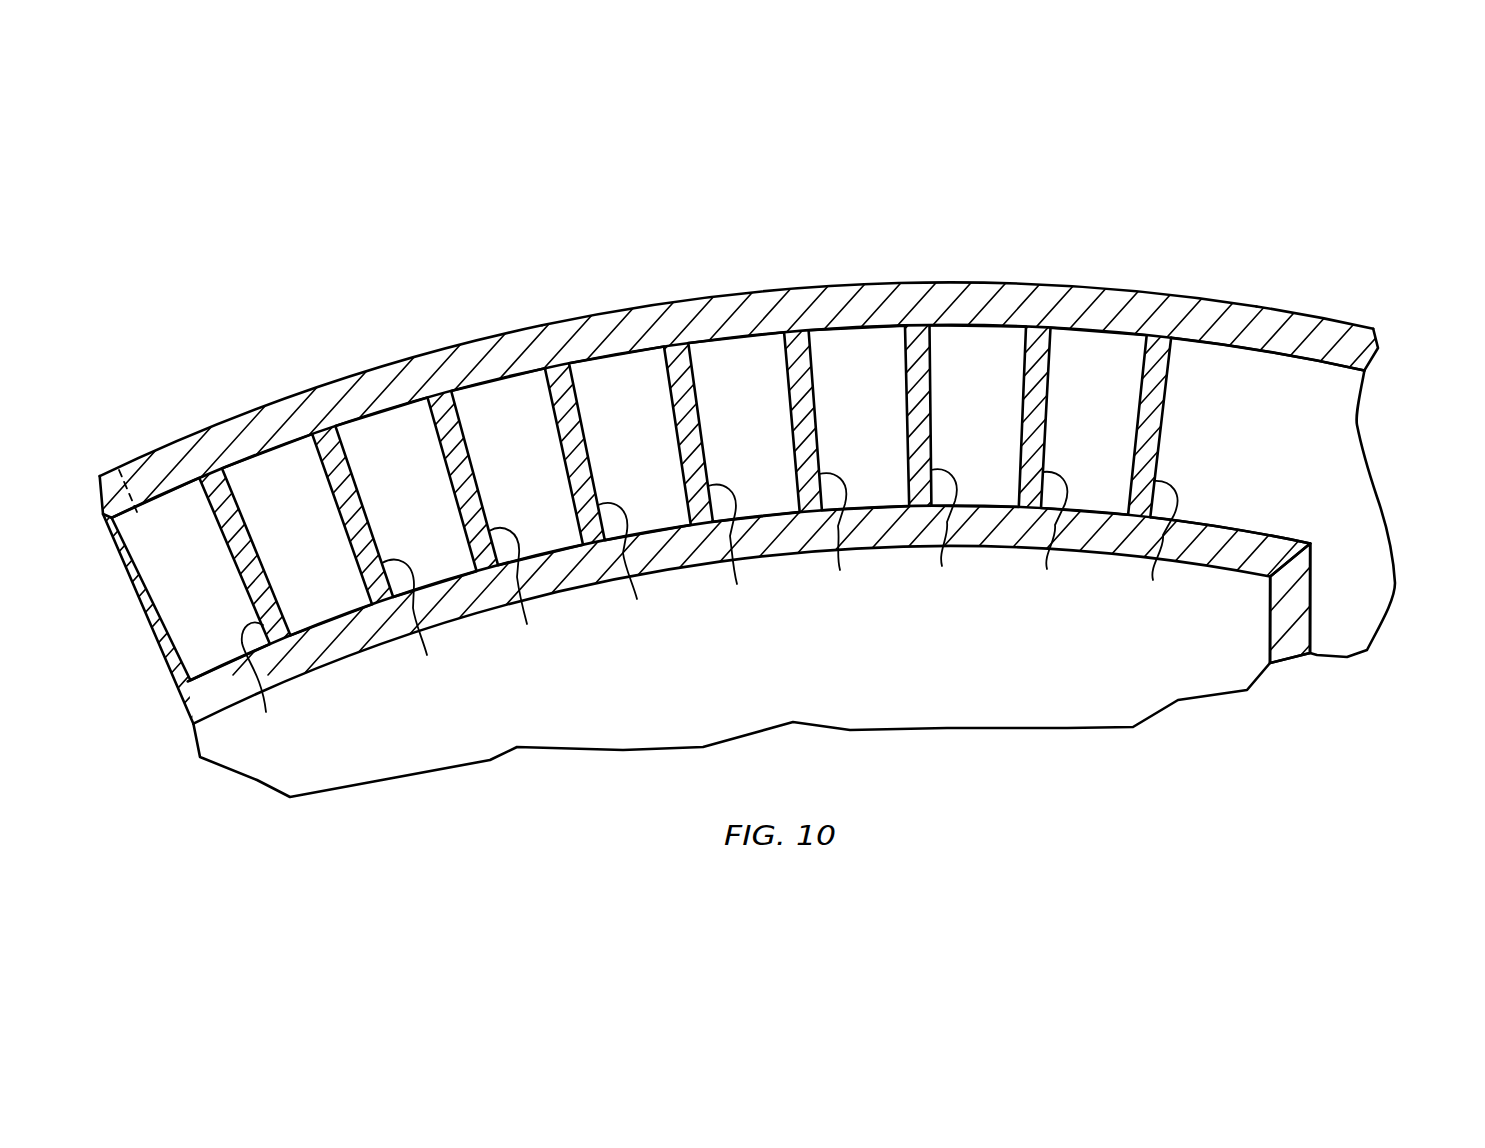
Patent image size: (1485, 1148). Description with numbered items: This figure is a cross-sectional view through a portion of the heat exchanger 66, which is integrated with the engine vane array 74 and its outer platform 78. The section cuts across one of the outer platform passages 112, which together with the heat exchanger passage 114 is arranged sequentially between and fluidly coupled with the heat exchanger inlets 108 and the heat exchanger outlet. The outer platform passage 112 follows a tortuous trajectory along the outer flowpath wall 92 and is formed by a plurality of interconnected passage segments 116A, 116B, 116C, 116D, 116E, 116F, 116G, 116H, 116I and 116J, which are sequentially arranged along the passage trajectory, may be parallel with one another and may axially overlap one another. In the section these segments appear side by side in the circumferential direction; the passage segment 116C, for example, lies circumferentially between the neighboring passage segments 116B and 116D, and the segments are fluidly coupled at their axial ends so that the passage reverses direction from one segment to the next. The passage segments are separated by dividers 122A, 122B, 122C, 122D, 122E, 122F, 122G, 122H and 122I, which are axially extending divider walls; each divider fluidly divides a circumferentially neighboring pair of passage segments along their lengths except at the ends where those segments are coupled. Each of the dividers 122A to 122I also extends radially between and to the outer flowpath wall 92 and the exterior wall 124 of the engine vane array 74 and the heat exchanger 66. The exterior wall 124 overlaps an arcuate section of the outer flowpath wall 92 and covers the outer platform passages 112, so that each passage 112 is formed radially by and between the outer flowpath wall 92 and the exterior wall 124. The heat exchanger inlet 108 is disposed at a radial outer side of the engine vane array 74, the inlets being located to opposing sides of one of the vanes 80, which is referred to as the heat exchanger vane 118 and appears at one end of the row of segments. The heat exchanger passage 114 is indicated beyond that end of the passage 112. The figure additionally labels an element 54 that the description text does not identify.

The engine vane array 74 is at (782, 475).
The heat exchanger 66 is at (987, 280).
The outer platform 78 is at (1349, 308).
The exterior wall 124 is at (270, 404).
The outer platform passage 112 is at (389, 426).
The heat exchanger inlet 108 is at (173, 482).
The outer flowpath wall 92 is at (347, 658).
The vane 80 is at (1244, 642).
The heat exchanger vane 118 is at (1290, 603).
The heat exchanger passage 114 is at (1353, 596).
The flow passage 54 is at (755, 679).
The passage segment 116A is at (155, 581).
The passage segment 116B is at (274, 538).
The passage segment 116C is at (392, 506).
The passage segment 116D is at (489, 461).
The passage segment 116E is at (609, 443).
The passage segment 116F is at (724, 424).
The passage segment 116G is at (837, 414).
The passage segment 116H is at (952, 416).
The passage segment 116I is at (1070, 422).
The passage segment 116J is at (1222, 449).
The divider 122A is at (271, 687).
The divider 122B is at (418, 621).
The divider 122C is at (521, 590).
The divider 122D is at (631, 565).
The divider 122E is at (736, 548).
The divider 122F is at (840, 535).
The divider 122G is at (942, 531).
The divider 122H is at (1047, 534).
The divider 122I is at (1153, 544).